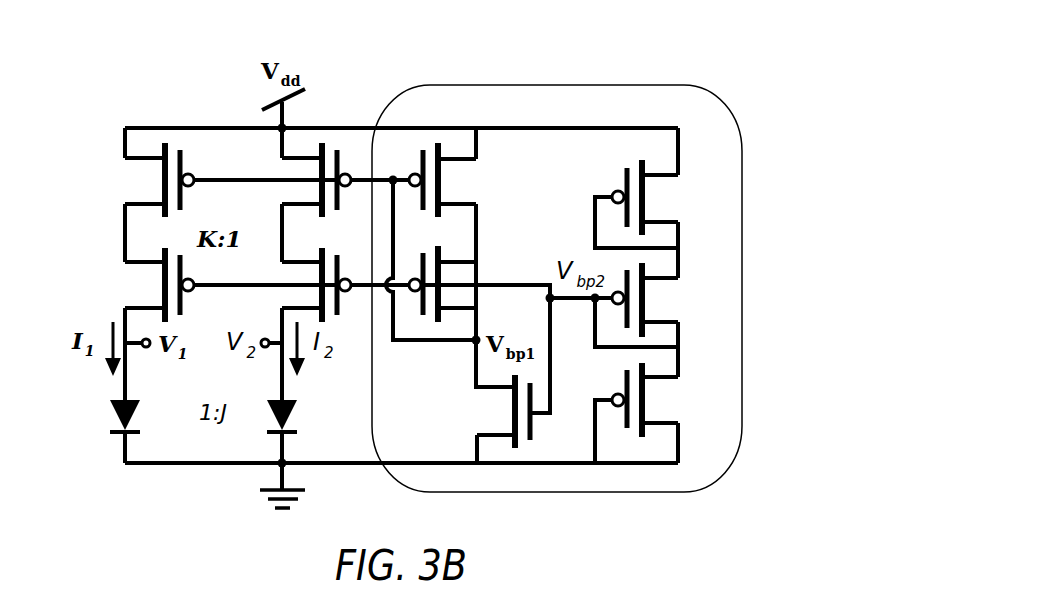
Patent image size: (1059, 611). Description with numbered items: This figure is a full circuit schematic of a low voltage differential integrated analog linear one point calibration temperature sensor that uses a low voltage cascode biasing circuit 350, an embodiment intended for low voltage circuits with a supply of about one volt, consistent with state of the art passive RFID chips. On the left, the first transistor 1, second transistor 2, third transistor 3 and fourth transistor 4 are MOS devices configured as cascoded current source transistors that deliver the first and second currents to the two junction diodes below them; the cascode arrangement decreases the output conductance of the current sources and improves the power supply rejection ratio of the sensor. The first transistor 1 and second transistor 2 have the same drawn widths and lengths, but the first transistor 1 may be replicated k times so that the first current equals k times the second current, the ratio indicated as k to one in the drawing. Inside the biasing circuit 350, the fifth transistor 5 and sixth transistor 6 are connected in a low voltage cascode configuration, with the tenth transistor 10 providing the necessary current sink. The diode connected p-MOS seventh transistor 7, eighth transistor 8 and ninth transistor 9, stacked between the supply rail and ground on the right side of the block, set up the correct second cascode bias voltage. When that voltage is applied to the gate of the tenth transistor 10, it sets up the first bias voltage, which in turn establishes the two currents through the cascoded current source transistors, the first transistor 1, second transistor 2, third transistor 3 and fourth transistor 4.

The low voltage cascode biasing circuit 350 is at (683, 85).
The transistor M1 1 is at (140, 180).
The transistor M2 2 is at (293, 175).
The transistor M3 3 is at (140, 285).
The transistor M4 4 is at (293, 285).
The transistor M5 5 is at (466, 180).
The transistor M6 6 is at (466, 283).
The transistor M7 7 is at (662, 204).
The transistor M8 8 is at (662, 305).
The transistor M9 9 is at (662, 413).
The transistor M10 10 is at (492, 411).